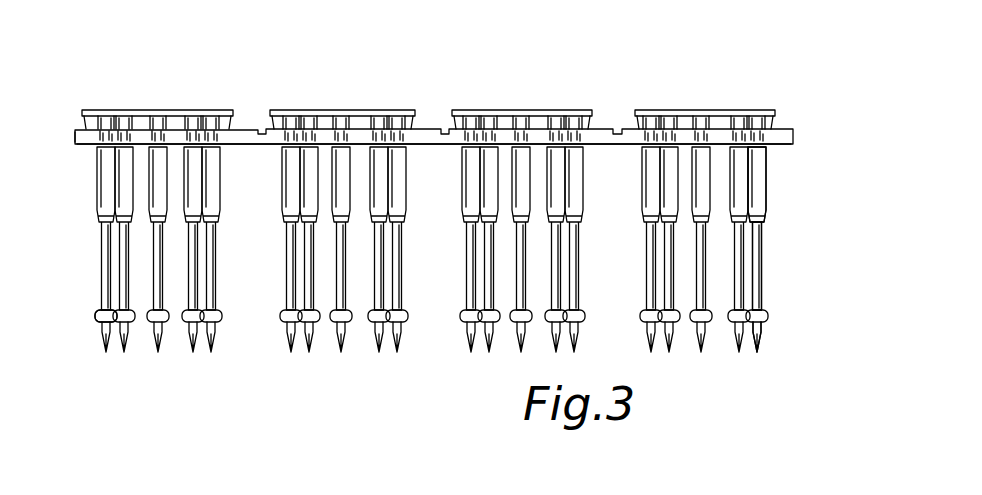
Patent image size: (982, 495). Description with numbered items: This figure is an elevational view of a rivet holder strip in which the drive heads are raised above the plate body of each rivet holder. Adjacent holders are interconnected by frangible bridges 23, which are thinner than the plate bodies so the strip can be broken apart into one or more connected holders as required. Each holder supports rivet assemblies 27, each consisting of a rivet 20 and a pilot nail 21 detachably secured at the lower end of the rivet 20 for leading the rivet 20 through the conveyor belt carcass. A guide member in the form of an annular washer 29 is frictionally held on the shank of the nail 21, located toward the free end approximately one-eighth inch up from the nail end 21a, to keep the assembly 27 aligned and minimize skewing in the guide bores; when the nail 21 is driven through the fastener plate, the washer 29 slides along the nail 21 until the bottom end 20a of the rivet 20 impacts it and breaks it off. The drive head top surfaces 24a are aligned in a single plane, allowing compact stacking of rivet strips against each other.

The rivet 20 is at (435, 213).
The bottom end of the rivet 20a is at (767, 208).
The pilot nail 21 is at (762, 263).
The nail end 21a is at (762, 337).
The frangible bridge 23 is at (262, 148).
The drive head top surface 24a is at (310, 110).
The rivet assembly 27 is at (93, 153).
The guide member (annular washer) 29 is at (84, 334).